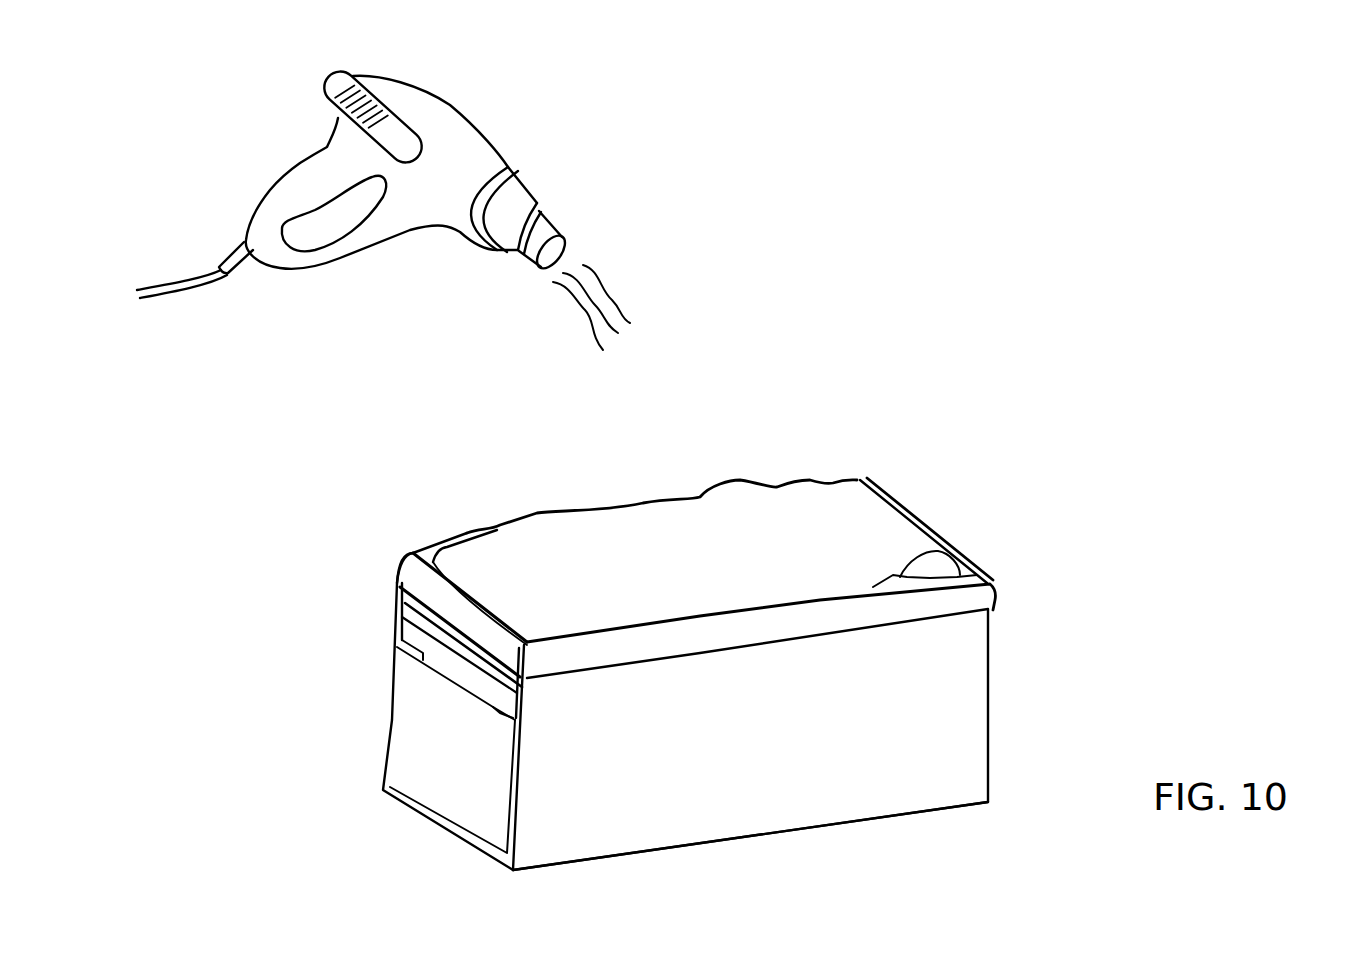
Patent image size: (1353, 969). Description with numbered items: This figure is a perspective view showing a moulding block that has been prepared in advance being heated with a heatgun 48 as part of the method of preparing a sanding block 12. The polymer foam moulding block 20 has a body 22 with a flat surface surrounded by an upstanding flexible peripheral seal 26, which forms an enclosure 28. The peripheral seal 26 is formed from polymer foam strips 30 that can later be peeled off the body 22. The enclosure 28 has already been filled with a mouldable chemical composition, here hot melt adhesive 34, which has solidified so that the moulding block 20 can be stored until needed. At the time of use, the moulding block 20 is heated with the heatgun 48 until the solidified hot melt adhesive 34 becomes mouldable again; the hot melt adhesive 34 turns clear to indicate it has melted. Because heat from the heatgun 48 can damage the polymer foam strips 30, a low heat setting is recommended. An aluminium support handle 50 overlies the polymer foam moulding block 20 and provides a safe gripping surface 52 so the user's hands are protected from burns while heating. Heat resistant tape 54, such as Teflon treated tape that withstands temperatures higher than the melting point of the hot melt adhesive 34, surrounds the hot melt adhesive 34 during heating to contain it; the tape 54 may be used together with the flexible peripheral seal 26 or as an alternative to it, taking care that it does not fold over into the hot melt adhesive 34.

The sanding block 12 is at (255, 616).
The polymer foam moulding block 20 is at (482, 700).
The body 22 is at (413, 618).
The upstanding flexible peripheral seal 26 is at (400, 600).
The enclosure 28 is at (915, 560).
The polymer foam strips 30 is at (987, 566).
The hot melt adhesive 34 is at (653, 523).
The heatgun 48 is at (448, 105).
The aluminium support handle 50 is at (993, 665).
The safe gripping surface 52 is at (608, 838).
The heat resistant tape 54 is at (405, 555).